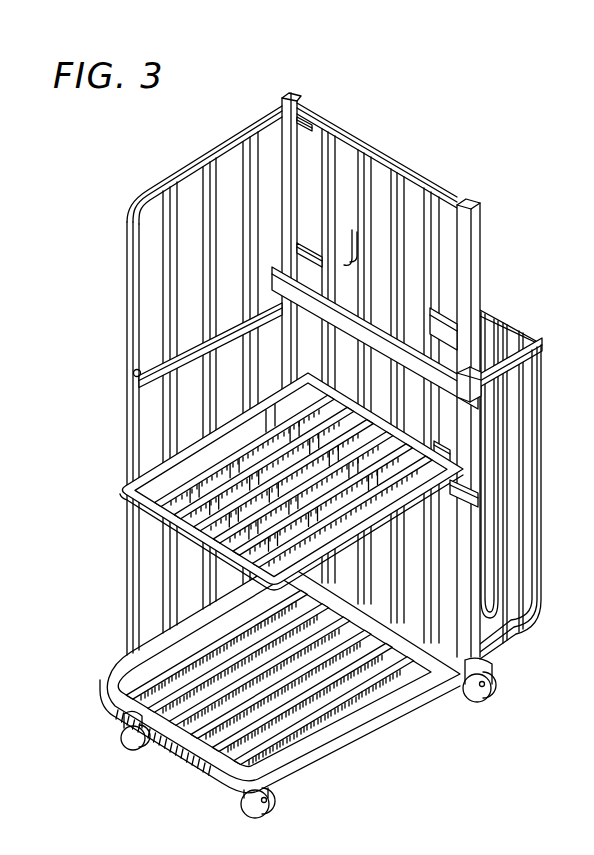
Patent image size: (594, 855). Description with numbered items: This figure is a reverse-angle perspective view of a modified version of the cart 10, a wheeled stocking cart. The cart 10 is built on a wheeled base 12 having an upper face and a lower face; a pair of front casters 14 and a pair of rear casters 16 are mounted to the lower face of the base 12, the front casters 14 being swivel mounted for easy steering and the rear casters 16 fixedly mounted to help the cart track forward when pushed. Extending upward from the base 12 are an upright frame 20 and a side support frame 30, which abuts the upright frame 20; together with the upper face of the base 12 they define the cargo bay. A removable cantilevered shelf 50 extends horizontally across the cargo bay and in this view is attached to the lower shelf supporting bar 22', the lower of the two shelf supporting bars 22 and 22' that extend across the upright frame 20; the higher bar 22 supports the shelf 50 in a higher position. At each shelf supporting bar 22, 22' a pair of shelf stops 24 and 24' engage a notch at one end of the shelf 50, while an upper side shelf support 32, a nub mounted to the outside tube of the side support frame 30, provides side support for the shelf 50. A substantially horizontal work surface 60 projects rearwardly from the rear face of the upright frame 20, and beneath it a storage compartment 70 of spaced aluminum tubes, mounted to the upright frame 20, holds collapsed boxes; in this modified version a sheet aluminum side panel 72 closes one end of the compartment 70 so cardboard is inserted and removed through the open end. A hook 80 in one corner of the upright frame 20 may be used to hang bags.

The cart 10 is at (350, 36).
The wheeled base 12 is at (340, 762).
The front casters 14 is at (127, 742).
The rear casters 16 is at (483, 702).
The upright frame 20 is at (440, 178).
The shelf supporting bar 22 is at (422, 338).
The shelf supporting bar 22' is at (516, 512).
The shelf stop 24 is at (262, 189).
The shelf stop 24' is at (506, 445).
The side support frame 30 is at (128, 352).
The side shelf support 32 is at (134, 375).
The cantilevered shelf 50 is at (124, 494).
The work surface 60 is at (443, 316).
The storage compartment 70 is at (540, 592).
The side panel 72 is at (338, 266).
The hook 80 is at (305, 121).